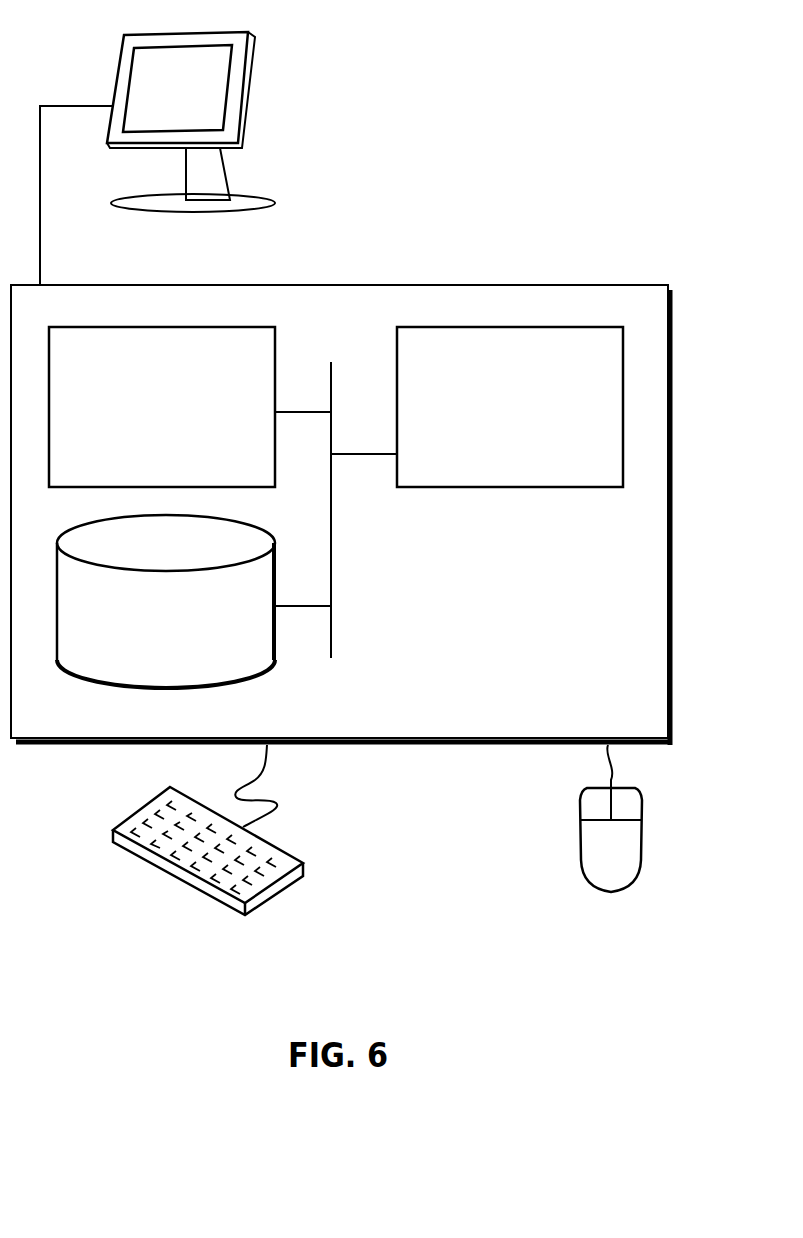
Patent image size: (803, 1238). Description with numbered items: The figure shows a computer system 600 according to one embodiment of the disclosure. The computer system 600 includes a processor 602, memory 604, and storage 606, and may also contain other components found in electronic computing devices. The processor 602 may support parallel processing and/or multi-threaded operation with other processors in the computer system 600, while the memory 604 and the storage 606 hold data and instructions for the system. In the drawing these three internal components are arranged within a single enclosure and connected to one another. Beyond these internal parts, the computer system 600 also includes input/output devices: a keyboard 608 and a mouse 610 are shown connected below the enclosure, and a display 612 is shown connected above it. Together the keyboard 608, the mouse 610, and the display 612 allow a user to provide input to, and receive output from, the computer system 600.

The computer system 600 is at (386, 265).
The processor 602 is at (492, 419).
The memory 604 is at (142, 419).
The storage 606 is at (148, 629).
The keyboard 608 is at (133, 850).
The mouse 610 is at (590, 861).
The display 612 is at (191, 137).